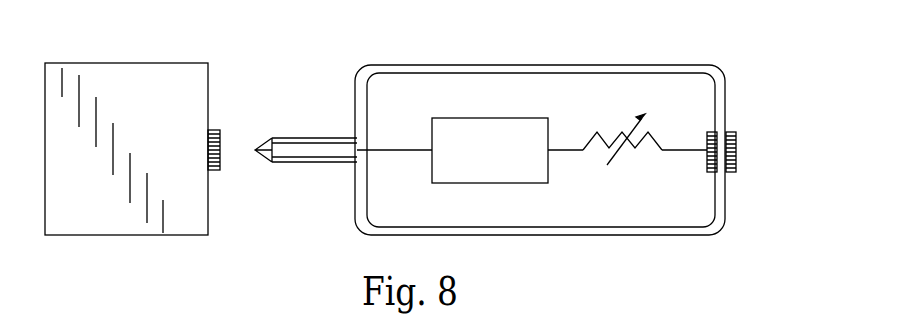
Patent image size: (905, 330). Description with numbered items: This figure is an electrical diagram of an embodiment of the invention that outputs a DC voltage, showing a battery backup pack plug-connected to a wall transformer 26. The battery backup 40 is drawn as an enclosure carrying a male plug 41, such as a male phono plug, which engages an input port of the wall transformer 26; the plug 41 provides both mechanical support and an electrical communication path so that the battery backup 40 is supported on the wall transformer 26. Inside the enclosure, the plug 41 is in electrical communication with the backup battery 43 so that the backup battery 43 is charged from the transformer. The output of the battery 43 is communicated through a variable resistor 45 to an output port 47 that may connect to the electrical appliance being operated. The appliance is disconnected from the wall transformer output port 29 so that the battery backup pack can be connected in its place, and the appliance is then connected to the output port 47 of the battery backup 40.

The wall transformer 26 is at (160, 63).
The wall transformer output port 29 is at (213, 170).
The male plug 41 is at (328, 138).
The battery backup 40 is at (491, 35).
The backup battery 43 is at (498, 118).
The variable resistor 45 is at (615, 137).
The output port 47 is at (731, 132).